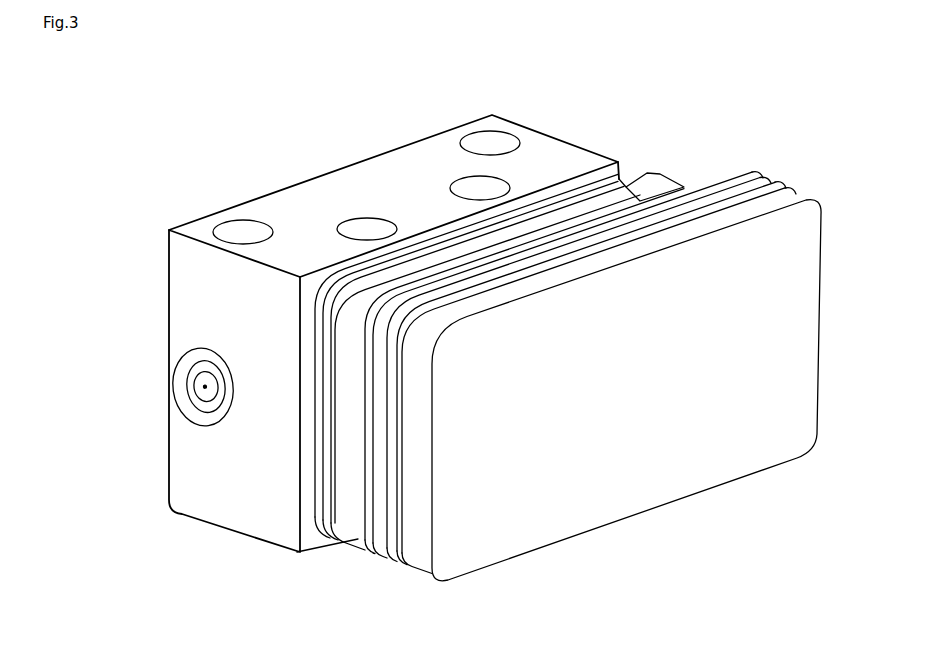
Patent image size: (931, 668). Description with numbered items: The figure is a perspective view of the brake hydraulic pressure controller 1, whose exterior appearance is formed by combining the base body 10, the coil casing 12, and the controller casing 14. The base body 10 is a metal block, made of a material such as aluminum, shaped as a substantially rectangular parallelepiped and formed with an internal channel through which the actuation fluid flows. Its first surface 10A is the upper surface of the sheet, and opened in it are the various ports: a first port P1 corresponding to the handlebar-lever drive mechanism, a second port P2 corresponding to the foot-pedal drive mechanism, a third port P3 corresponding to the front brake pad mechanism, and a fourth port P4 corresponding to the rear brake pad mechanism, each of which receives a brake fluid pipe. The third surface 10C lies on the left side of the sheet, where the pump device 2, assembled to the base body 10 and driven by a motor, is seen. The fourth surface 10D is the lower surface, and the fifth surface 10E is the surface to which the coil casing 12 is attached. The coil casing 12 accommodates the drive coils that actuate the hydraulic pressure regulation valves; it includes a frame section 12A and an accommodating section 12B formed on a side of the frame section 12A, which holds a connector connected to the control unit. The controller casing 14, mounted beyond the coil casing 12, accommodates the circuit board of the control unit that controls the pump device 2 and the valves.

The brake hydraulic pressure controller 1 is at (247, 154).
The pump device 2 is at (195, 392).
The base body 10 is at (343, 167).
The first surface 10A is at (553, 162).
The third surface 10C is at (212, 508).
The fourth surface 10D is at (258, 548).
The fifth surface 10E is at (626, 178).
The coil casing 12 is at (347, 534).
The frame section 12A is at (323, 545).
The accommodating section 12B is at (684, 186).
The controller casing 14 is at (793, 220).
The first port P1 is at (232, 237).
The second port P2 is at (477, 150).
The third port P3 is at (352, 232).
The fourth port P4 is at (467, 192).